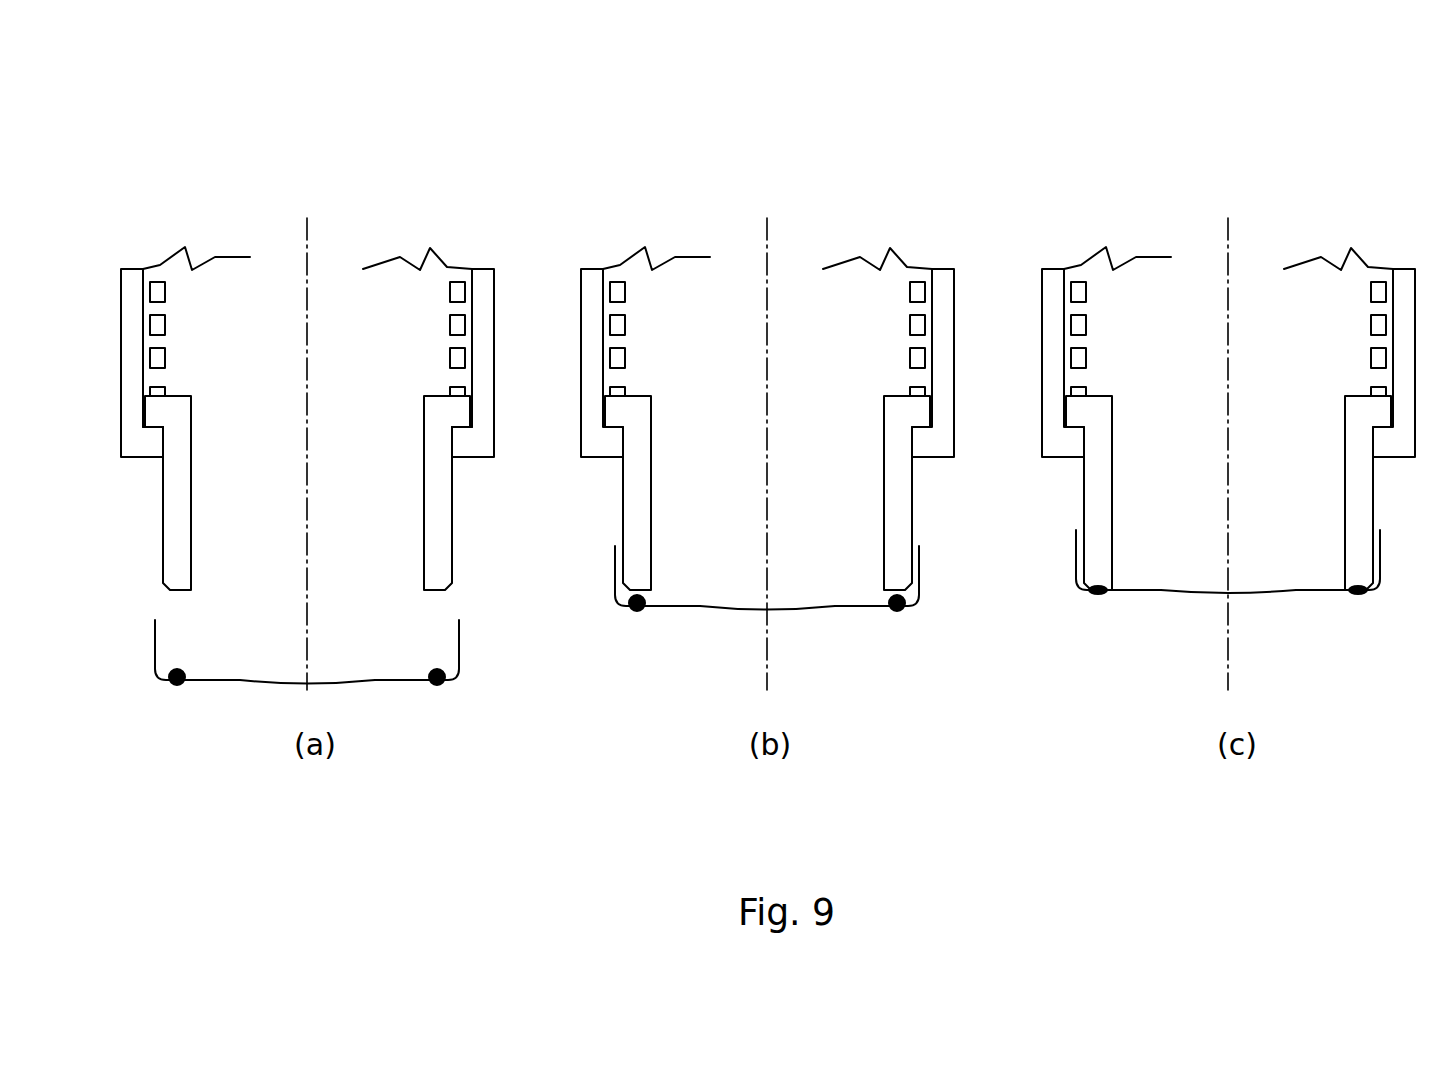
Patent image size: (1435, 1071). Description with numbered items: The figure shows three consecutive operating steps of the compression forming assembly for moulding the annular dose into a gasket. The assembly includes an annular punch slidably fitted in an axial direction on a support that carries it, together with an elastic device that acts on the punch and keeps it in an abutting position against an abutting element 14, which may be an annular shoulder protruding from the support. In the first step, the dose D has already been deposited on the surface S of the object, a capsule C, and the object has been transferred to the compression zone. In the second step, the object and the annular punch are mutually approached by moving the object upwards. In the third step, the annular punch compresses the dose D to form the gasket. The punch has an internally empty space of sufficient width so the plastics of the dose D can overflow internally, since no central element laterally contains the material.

The abutting element 14 is at (473, 443).
The surface S is at (256, 682).
The capsule C is at (460, 640).
The annular dose D is at (767, 657).